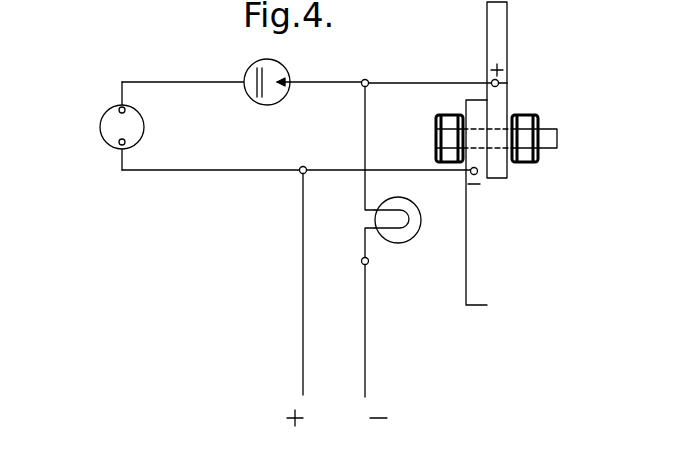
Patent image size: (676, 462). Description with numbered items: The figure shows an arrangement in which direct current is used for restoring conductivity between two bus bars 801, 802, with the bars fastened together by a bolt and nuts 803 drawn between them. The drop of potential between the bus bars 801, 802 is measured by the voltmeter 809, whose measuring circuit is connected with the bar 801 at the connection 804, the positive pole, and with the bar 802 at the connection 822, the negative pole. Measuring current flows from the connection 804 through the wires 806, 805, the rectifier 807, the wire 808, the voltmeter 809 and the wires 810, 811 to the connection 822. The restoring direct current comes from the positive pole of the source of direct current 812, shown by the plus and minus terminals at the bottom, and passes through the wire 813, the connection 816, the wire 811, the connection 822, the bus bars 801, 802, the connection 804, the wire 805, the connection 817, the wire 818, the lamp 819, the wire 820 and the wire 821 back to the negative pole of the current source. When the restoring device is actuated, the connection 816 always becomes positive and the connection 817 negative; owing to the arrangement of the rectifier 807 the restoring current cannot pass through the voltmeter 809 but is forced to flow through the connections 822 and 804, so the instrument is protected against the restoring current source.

The bus bar 801 is at (508, 34).
The bus bar 802 is at (488, 281).
The bolt with nuts 803 is at (553, 138).
The connection 804 is at (507, 83).
The wire 805 is at (432, 83).
The wire 806 is at (329, 81).
The rectifier 807 is at (258, 100).
The wire 808 is at (190, 81).
The voltmeter 809 is at (100, 127).
The wire 810 is at (206, 172).
The wire 811 is at (407, 175).
The source of direct current 812 is at (337, 410).
The wire 813 is at (300, 363).
The connection 816 is at (302, 167).
The connection 817 is at (368, 87).
The wire 818 is at (367, 138).
The lamp 819 is at (418, 235).
The wire 820 is at (368, 248).
The wire 821 is at (368, 363).
The connection 822 is at (482, 177).